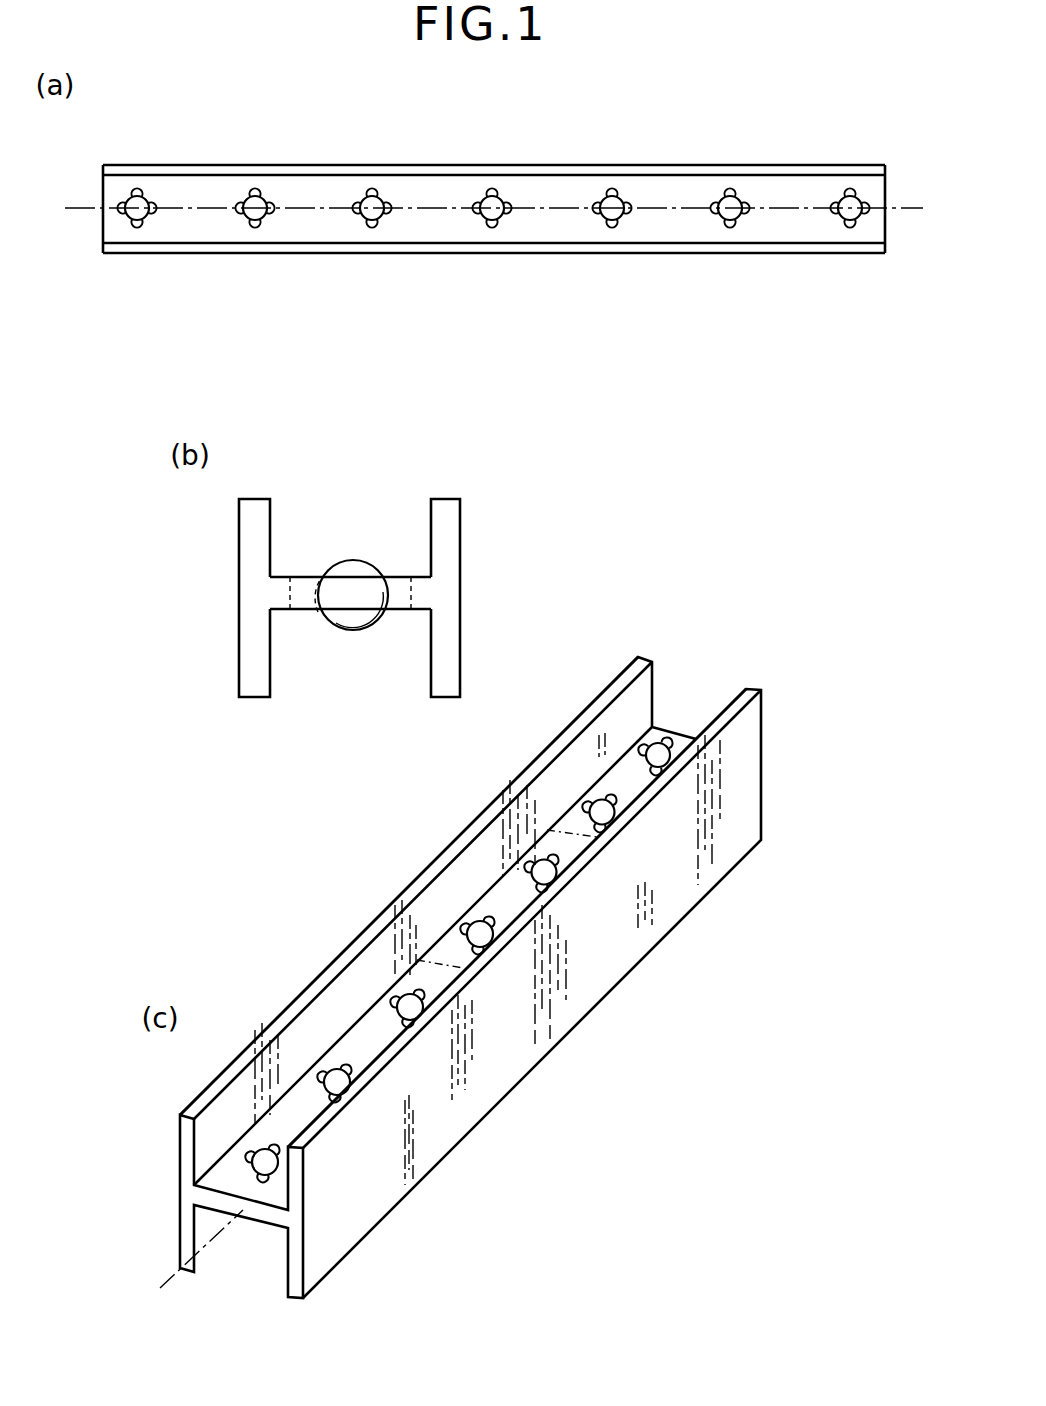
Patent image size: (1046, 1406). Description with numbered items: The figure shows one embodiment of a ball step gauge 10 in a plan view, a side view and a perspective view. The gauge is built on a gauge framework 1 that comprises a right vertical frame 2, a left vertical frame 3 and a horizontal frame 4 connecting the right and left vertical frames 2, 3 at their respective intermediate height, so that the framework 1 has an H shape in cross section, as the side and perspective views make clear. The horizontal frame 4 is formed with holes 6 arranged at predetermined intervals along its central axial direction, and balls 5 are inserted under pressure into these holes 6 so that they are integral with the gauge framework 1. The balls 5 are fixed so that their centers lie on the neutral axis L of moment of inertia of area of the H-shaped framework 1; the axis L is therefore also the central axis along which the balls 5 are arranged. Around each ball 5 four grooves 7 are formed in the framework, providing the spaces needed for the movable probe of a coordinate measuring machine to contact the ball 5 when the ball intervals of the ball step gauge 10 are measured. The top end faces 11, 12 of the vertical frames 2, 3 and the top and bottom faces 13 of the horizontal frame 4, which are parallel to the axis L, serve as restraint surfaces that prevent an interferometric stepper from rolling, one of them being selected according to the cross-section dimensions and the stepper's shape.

The gauge framework 1 is at (494, 682).
The right vertical frame 2 is at (565, 165).
The left vertical frame 3 is at (657, 253).
The horizontal frame 4 is at (690, 228).
The balls 5 is at (145, 200).
The holes 6 is at (317, 595).
The grooves 7 is at (137, 190).
The ball step gauge 10 is at (517, 147).
The top end face 11 is at (445, 498).
The top end face 12 is at (253, 498).
The top and bottom faces 13 is at (283, 576).
The neutral axis L is at (95, 207).